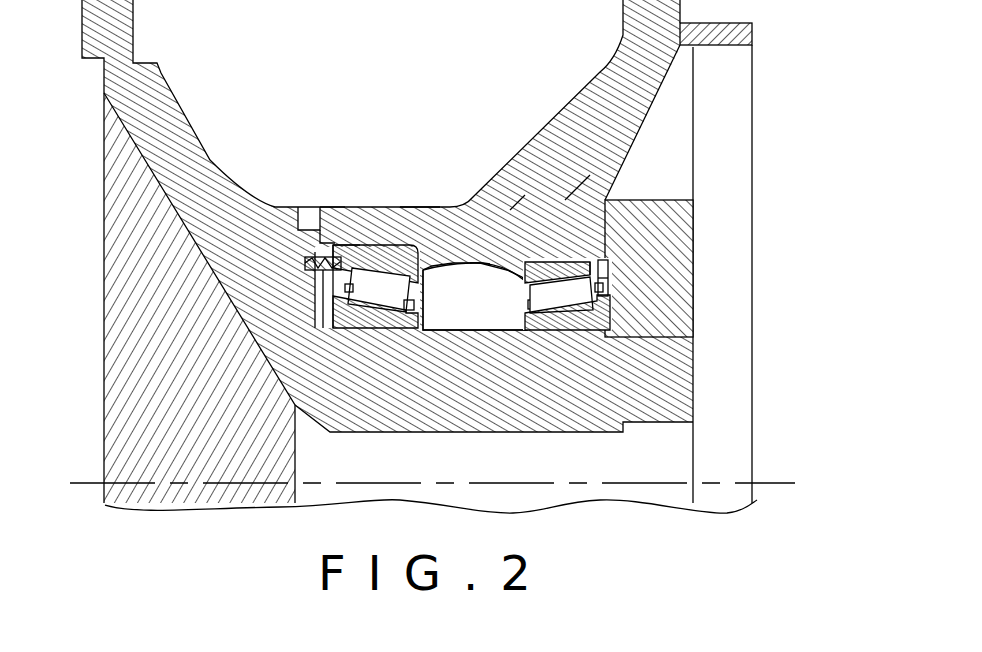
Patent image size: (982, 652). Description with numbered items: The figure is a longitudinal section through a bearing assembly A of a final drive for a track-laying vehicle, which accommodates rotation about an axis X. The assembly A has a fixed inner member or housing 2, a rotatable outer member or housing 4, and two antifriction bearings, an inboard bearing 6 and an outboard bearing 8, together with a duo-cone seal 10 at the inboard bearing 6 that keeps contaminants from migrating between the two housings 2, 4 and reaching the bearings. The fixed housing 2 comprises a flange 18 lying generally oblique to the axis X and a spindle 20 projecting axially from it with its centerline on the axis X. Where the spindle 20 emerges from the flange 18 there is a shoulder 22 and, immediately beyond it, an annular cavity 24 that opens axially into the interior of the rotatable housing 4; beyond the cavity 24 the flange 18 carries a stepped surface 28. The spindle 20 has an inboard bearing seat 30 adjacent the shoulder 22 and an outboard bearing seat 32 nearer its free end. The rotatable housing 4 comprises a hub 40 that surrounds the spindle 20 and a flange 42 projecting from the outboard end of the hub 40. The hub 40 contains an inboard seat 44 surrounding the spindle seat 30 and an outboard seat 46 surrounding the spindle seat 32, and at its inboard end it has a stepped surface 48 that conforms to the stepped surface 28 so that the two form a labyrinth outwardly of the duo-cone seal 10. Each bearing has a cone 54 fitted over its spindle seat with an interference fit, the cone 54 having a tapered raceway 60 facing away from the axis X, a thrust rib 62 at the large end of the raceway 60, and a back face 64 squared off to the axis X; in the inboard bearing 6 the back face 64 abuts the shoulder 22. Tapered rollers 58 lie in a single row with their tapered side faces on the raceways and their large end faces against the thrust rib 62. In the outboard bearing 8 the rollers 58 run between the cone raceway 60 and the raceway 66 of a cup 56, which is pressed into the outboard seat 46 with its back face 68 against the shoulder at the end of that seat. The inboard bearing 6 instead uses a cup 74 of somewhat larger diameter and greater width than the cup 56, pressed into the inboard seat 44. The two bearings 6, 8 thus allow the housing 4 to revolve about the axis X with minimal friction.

The fixed inner member or housing 2 is at (184, 91).
The rotatable outer member or housing 4 is at (592, 73).
The inboard antifriction bearing 6 is at (310, 334).
The outboard antifriction bearing 8 is at (605, 200).
The duo-cone seal 10 is at (305, 254).
The flange 18 is at (277, 224).
The spindle 20 is at (507, 407).
The shoulder 22 is at (358, 330).
The annular cavity 24 is at (317, 278).
The stepped surface 28 is at (297, 224).
The inboard bearing seat 30 is at (360, 294).
The outboard bearing seat 32 is at (555, 332).
The hub 40 is at (425, 212).
The flange 42 is at (640, 126).
The inboard seat 44 is at (381, 247).
The outboard seat 46 is at (522, 200).
The stepped surface 48 is at (343, 214).
The cone 54 is at (392, 318).
The cup 56 is at (565, 200).
The tapered rollers 58 is at (327, 307).
The tapered raceway 60 is at (528, 292).
The thrust rib 62 is at (605, 282).
The back face 64 is at (590, 288).
The raceway 66 is at (620, 262).
The back face 68 is at (490, 247).
The inboard cup 74 is at (360, 246).
The bearing assembly A is at (265, 192).
The axis X is at (447, 487).